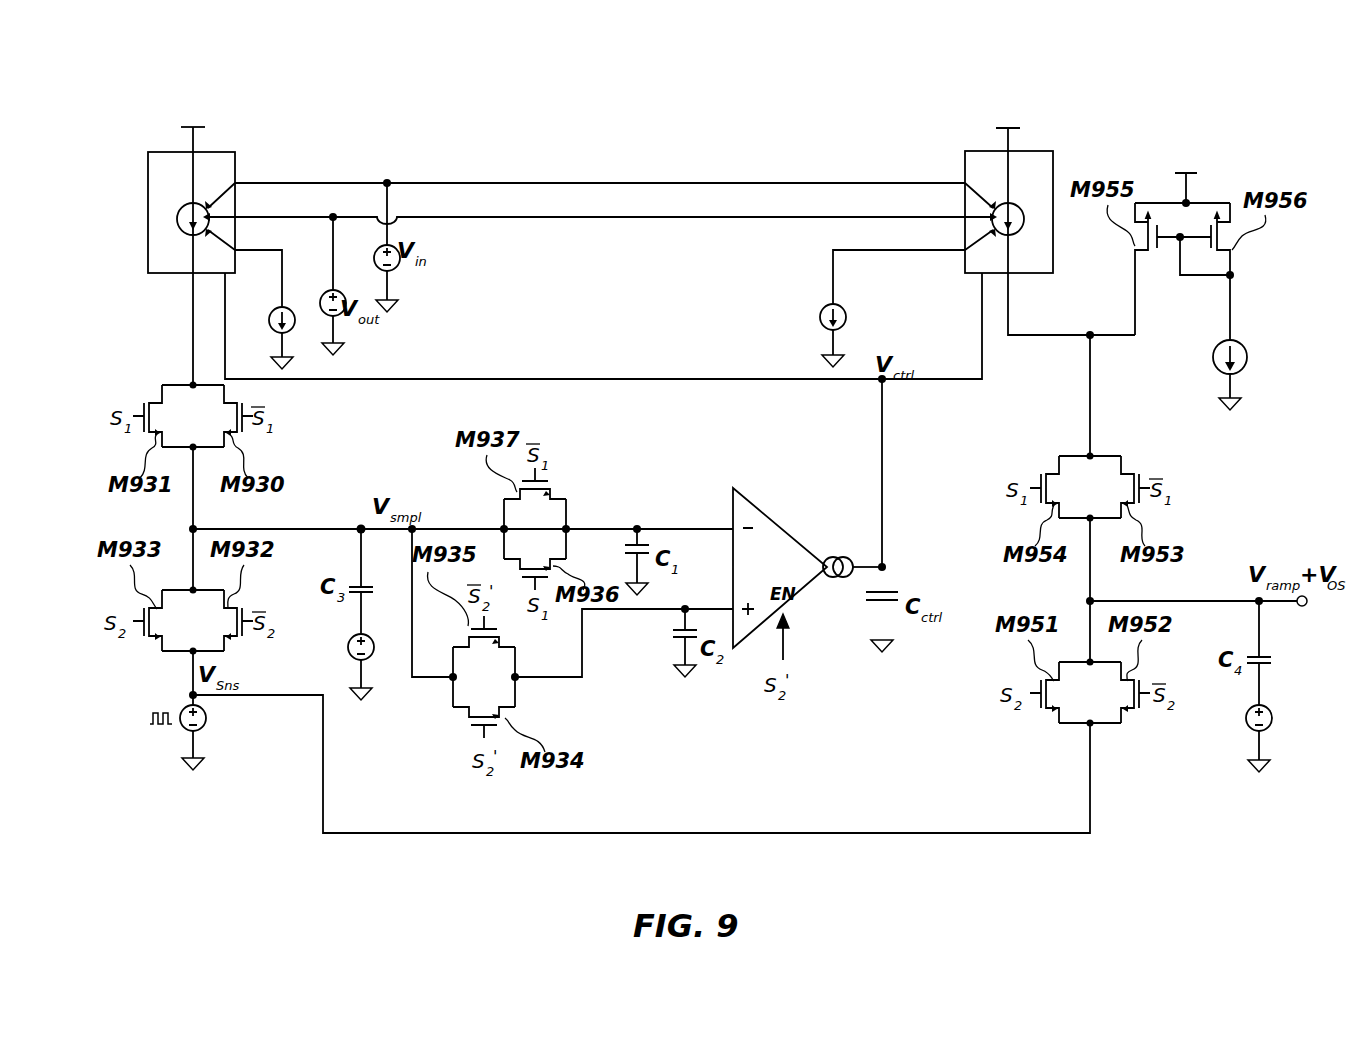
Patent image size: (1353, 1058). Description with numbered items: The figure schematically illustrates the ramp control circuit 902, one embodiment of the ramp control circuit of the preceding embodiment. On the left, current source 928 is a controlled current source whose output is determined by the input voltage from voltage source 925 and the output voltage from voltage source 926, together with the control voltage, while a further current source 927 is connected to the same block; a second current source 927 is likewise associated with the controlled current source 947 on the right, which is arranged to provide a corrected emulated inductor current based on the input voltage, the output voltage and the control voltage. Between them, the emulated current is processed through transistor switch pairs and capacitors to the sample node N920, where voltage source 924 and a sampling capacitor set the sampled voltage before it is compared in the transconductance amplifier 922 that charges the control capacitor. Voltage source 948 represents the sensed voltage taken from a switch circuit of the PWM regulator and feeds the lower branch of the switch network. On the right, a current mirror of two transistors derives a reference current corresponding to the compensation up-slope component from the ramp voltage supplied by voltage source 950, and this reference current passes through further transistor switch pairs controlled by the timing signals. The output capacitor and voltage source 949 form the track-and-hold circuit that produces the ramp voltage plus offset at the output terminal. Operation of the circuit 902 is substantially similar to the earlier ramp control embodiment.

The ramp control circuit 902 is at (1176, 103).
The amplifier with enable 922 is at (768, 512).
The voltage source 924 is at (369, 660).
The voltage source 925 is at (374, 258).
The voltage source 926 is at (343, 315).
The current source 927 is at (270, 318).
The current source 928 is at (148, 265).
The current source 947 is at (965, 160).
The voltage source 948 is at (204, 730).
The voltage source 949 is at (1249, 729).
The voltage source 950 is at (1243, 370).
The sample node N920 is at (360, 522).